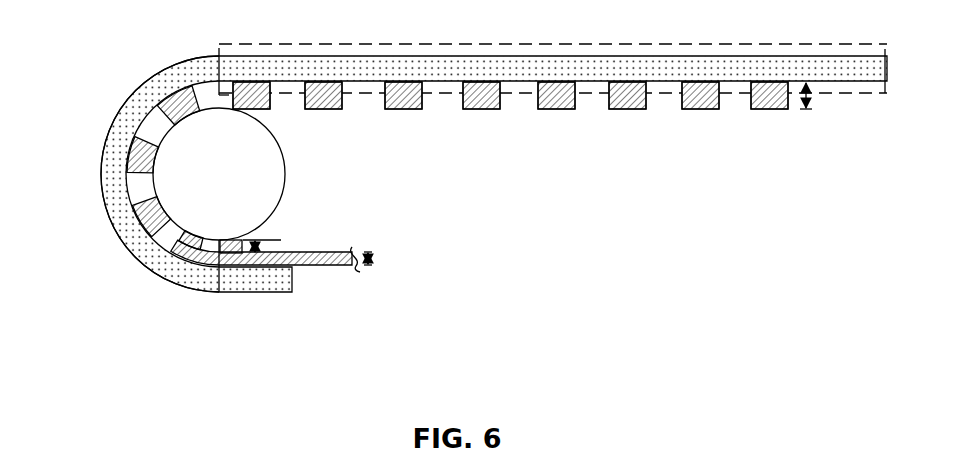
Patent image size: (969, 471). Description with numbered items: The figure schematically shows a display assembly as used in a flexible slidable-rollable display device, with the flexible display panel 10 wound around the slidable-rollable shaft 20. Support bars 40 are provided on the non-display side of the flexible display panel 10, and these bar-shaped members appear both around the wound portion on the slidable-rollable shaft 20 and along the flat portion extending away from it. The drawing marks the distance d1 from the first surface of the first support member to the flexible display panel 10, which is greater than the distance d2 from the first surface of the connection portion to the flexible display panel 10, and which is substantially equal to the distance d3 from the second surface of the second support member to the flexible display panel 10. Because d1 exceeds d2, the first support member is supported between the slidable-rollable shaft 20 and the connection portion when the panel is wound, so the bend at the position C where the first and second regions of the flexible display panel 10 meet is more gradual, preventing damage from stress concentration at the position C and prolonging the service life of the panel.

The flexible display panel 10 is at (90, 175).
The slidable-rollable shaft 20 is at (264, 190).
The support bars 40 is at (147, 212).
The position where the first region and the second region meet C is at (190, 305).
The distance from the first surface of the first support member to the flexible disp d1 is at (277, 241).
The distance from the first surface of the connection portion to the flexible displa d2 is at (378, 260).
The distance from the second surface of the second support member to the flexible di d3 is at (824, 104).